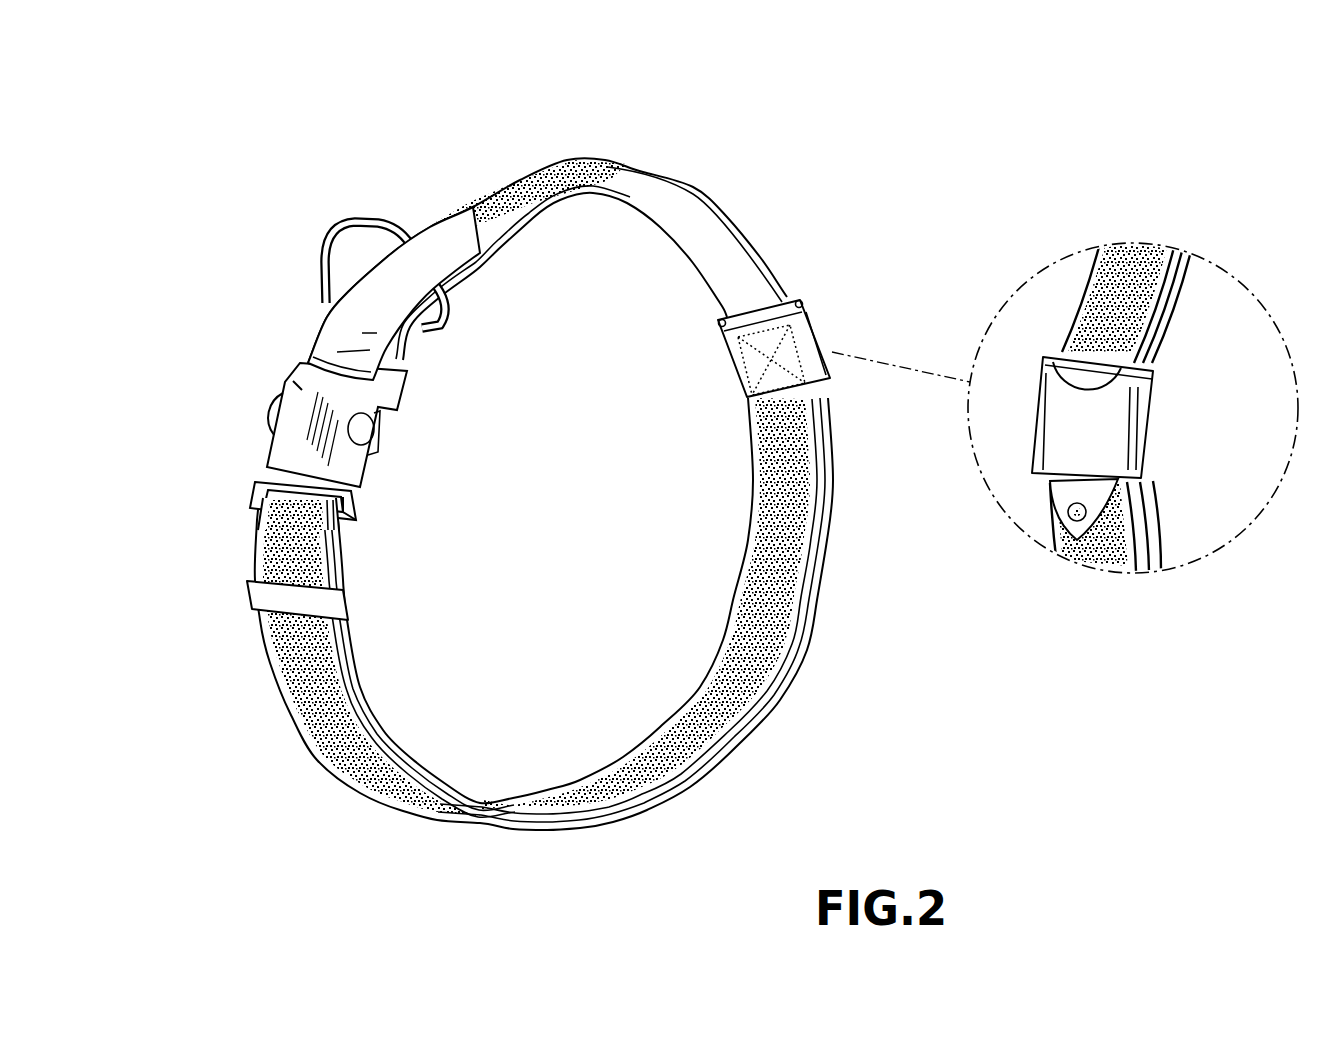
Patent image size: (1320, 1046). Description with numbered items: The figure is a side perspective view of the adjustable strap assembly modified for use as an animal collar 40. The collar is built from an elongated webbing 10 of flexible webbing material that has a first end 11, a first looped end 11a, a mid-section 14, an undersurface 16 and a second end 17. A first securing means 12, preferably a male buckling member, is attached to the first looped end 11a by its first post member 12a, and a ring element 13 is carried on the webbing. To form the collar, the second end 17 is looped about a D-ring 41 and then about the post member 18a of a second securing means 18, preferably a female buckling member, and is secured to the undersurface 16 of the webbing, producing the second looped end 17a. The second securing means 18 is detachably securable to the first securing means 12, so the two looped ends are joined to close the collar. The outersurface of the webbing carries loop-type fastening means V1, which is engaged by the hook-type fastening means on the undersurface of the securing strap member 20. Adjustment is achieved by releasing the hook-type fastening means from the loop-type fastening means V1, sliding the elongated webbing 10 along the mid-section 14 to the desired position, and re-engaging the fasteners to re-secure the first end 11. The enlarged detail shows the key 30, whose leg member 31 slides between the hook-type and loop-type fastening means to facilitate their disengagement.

The elongated webbing 10 is at (688, 178).
The first end 11 is at (746, 400).
The first looped end 11a is at (258, 528).
The first securing means 12 is at (314, 496).
The first post member 12a is at (345, 529).
The ring element 13 is at (258, 597).
The mid-section 14 is at (747, 537).
The undersurface 16 is at (733, 241).
The second end 17 is at (493, 257).
The second looped end 17a is at (320, 312).
The second securing means 18 is at (367, 400).
The post member 18a is at (403, 370).
The securing strap member 20 is at (787, 348).
The key 30 is at (1130, 325).
The leg member 31 is at (1098, 493).
The collar 40 is at (422, 867).
The D-ring 41 is at (357, 222).
The loop-type fastening means V1 is at (515, 196).